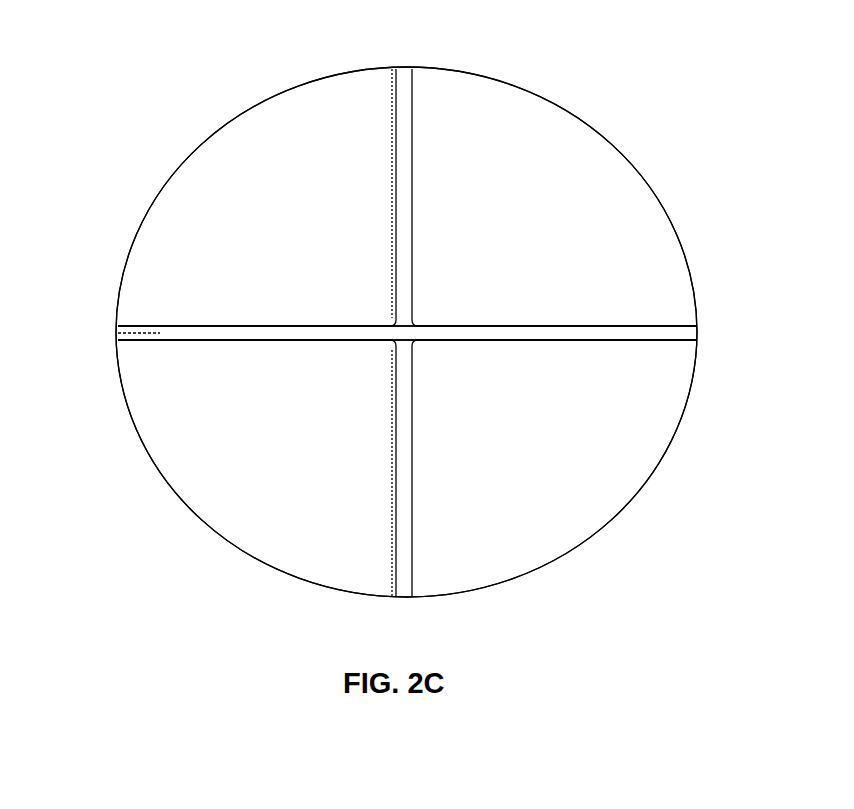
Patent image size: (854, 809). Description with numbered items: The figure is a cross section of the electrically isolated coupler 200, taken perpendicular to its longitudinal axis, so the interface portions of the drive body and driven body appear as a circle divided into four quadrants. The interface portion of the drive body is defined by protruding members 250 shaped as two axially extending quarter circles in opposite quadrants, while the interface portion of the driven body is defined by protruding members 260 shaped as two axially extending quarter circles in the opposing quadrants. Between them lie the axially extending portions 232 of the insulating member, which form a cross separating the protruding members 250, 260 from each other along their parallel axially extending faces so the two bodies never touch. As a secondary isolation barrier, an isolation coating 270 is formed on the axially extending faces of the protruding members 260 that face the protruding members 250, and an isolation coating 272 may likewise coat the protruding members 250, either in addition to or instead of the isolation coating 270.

The electrically isolated coupler 200 is at (612, 78).
The axially extending portions 232 is at (408, 68).
The protruding members 250 is at (636, 165).
The protruding members 260 is at (241, 131).
The isolation coating 270 is at (152, 326).
The isolation coating 272 is at (152, 340).